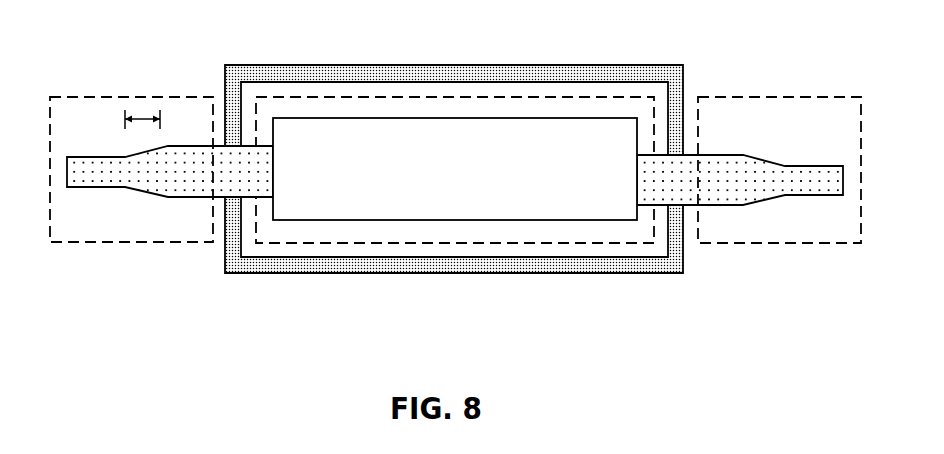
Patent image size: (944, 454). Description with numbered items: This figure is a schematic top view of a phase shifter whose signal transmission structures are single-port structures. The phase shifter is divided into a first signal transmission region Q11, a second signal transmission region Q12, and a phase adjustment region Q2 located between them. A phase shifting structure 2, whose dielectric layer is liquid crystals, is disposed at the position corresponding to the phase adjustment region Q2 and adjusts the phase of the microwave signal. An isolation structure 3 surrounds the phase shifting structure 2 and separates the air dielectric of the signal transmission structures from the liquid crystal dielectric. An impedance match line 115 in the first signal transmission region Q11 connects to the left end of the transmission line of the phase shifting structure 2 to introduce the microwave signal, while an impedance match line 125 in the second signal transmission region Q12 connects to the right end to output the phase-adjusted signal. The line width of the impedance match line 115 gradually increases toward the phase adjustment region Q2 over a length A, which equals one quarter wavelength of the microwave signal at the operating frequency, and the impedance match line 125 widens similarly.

The phase shifting structure 2 is at (558, 118).
The isolation structure 3 is at (472, 65).
The impedance match line 115 is at (83, 165).
The impedance match line 125 is at (818, 185).
The first signal transmission region Q11 is at (140, 242).
The second signal transmission region Q12 is at (785, 243).
The phase adjustment region Q2 is at (403, 243).
The length of the line-width increasing portion A is at (142, 112).